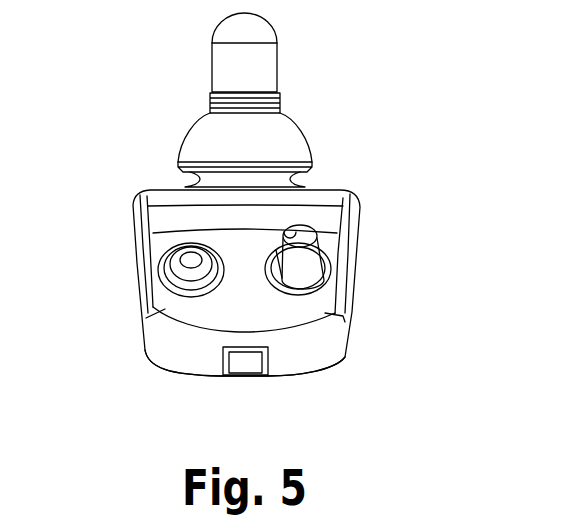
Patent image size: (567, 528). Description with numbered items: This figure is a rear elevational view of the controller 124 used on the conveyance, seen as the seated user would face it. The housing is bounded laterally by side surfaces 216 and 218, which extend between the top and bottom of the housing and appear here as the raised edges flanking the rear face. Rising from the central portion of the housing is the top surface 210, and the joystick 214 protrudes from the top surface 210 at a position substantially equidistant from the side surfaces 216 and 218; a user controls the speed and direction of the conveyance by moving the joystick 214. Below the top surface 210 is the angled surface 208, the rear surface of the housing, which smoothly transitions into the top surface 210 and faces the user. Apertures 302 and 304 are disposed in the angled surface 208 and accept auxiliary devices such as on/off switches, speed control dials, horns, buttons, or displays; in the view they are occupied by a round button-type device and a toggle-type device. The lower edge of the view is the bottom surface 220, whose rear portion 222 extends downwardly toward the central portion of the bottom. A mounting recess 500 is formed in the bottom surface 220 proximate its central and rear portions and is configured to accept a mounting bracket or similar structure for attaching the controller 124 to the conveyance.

The controller 124 is at (440, 56).
The joystick 214 is at (274, 58).
The top surface 210 is at (319, 190).
The side surface 218 is at (130, 220).
The side surface 216 is at (345, 230).
The angled surface 208 is at (227, 296).
The rear portion of bottom surface 222 is at (307, 354).
The bottom surface 220 is at (162, 399).
The aperture 302 is at (157, 270).
The aperture 304 is at (334, 267).
The mounting recess 500 is at (246, 369).